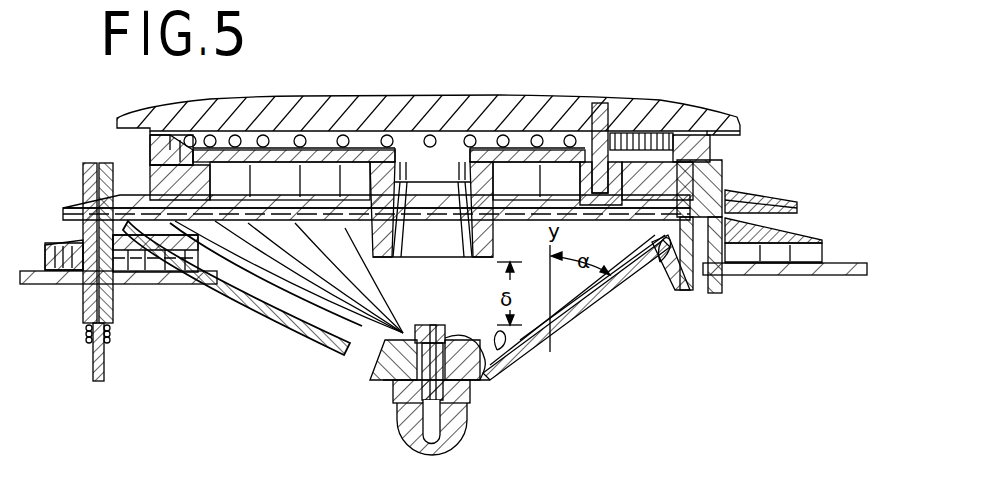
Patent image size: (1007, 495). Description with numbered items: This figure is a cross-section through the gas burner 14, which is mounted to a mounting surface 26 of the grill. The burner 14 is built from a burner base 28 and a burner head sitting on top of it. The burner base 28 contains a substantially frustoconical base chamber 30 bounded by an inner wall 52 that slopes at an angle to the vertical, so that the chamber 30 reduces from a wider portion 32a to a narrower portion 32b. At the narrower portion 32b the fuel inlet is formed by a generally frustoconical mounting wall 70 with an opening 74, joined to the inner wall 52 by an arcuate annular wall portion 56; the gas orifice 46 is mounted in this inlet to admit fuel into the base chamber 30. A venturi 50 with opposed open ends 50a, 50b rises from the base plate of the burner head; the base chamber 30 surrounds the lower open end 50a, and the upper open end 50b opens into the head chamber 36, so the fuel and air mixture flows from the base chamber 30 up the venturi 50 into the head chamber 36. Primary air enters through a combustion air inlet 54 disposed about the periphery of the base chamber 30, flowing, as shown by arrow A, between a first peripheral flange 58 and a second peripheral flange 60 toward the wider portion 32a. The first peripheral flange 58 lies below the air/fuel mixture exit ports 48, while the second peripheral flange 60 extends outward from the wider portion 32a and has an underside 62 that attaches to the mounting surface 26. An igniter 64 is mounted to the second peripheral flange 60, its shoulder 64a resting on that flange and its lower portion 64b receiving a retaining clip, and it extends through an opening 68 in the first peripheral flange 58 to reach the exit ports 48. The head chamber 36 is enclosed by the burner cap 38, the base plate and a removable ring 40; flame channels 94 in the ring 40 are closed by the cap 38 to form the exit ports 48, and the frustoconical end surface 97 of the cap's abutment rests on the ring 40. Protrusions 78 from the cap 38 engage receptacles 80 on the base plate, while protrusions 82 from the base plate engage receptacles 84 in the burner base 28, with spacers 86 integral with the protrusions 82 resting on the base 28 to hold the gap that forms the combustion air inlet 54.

The gas burner 14 is at (622, 70).
The mounting surface 26 is at (50, 285).
The burner base 28 is at (285, 322).
The base chamber 30 is at (587, 315).
The wider portion 32a is at (676, 278).
The narrower portion 32b is at (498, 348).
The head chamber 36 is at (330, 142).
The burner cap 38 is at (340, 96).
The removable ring 40 is at (713, 150).
The orifice 46 is at (408, 435).
The air/fuel mixture exit ports 48 is at (712, 130).
The venturi 50 is at (452, 217).
The lower open end 50a is at (463, 258).
The upper open end 50b is at (449, 142).
The inner wall 52 is at (580, 320).
The combustion air inlet 54 is at (75, 230).
The arcuate annular wall portion 56 is at (392, 385).
The first peripheral flange 58 is at (772, 192).
The second peripheral flange 60 is at (822, 241).
The underside 62 is at (749, 276).
The igniter 64 is at (110, 285).
The shoulder 64a is at (75, 233).
The lower portion 64b is at (87, 318).
The opening 68 is at (86, 198).
The mounting wall 70 is at (402, 348).
The opening 74 is at (408, 342).
The protrusions 78 is at (600, 108).
The receptacles 80 is at (613, 170).
The protrusions 82 is at (692, 296).
The receptacles 84 is at (713, 296).
The spacers 86 is at (702, 198).
The flame channels 94 is at (110, 142).
The frustoconical end surface 97 is at (150, 152).
The arrow A is at (318, 278).